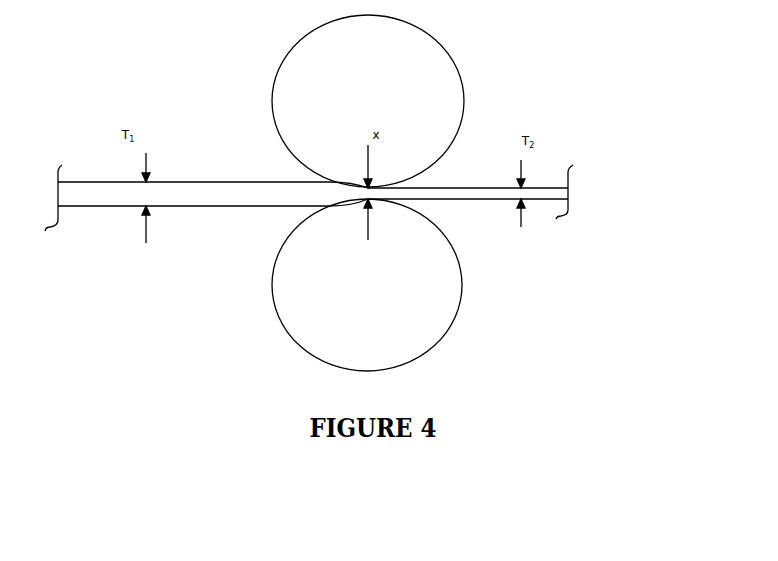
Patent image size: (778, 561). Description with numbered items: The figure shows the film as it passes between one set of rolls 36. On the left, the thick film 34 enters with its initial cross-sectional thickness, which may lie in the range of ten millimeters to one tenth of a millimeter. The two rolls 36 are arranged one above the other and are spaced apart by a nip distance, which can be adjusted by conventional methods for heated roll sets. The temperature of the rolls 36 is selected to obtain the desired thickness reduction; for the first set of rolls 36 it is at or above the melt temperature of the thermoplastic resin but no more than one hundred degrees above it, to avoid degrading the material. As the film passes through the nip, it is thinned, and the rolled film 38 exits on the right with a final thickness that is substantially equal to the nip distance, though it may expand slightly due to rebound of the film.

The thick film 34 is at (206, 203).
The set of rolls 36 is at (350, 85).
The rolled film 38 is at (470, 198).